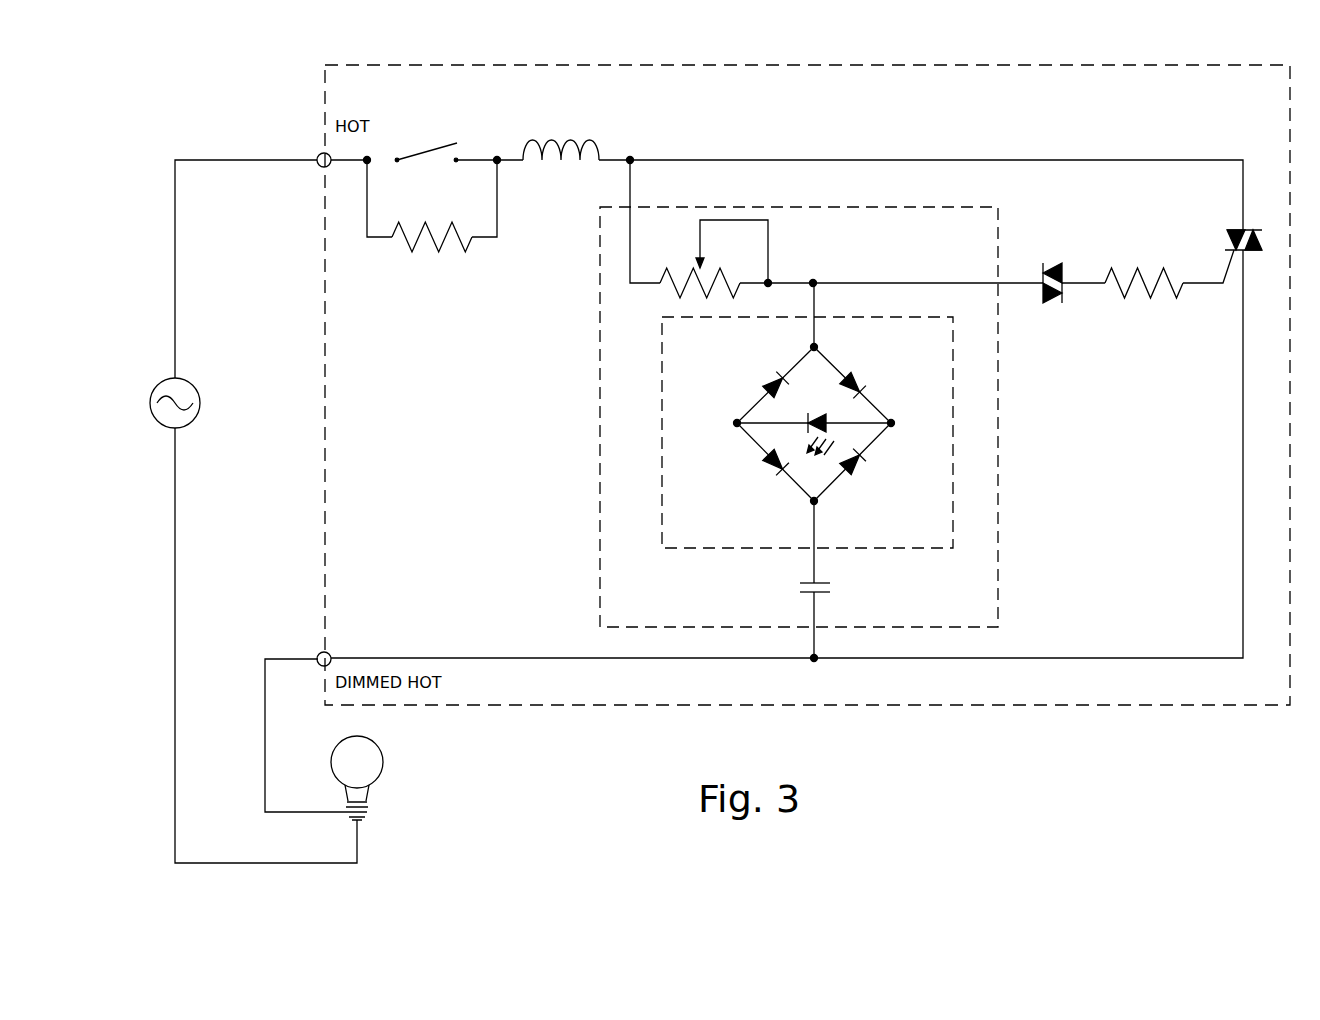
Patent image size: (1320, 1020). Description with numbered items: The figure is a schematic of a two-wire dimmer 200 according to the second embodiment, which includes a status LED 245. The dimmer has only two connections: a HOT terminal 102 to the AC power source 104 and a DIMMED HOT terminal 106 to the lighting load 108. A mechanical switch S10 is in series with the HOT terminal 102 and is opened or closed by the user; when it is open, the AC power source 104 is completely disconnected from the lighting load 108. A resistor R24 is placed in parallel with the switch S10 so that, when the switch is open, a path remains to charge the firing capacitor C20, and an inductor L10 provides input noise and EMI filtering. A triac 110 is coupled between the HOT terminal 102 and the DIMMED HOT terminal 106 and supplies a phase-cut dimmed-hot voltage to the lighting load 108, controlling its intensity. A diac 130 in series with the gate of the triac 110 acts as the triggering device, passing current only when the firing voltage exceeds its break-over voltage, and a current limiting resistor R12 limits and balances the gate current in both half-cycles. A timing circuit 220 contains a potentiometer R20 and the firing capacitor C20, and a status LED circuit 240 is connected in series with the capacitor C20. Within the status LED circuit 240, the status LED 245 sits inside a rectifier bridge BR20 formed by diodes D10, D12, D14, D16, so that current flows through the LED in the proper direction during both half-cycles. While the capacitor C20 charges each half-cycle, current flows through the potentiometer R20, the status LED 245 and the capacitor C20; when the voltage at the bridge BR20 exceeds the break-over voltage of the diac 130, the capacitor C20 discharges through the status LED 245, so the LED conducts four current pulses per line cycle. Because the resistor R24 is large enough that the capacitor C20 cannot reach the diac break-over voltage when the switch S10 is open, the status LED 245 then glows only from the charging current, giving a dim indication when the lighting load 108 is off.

The two-wire dimmer 200 is at (970, 65).
The HOT terminal 102 is at (319, 165).
The AC power source 104 is at (192, 390).
The DIMMED HOT terminal 106 is at (318, 655).
The lighting load 108 is at (383, 764).
The triac 110 is at (1228, 238).
The diac 130 is at (1060, 268).
The timing circuit 220 is at (600, 350).
The status LED circuit 240 is at (723, 548).
The status LED 245 is at (822, 428).
The mechanical switch S10 is at (432, 138).
The resistor R24 is at (432, 206).
The inductor L10 is at (561, 136).
The potentiometer R20 is at (844, 259).
The current limiting resistor R12 is at (1122, 271).
The firing capacitor C20 is at (796, 581).
The rectifier bridge BR20 is at (805, 412).
The diode D10 is at (870, 384).
The diode D12 is at (757, 473).
The diode D14 is at (859, 480).
The diode D16 is at (763, 380).